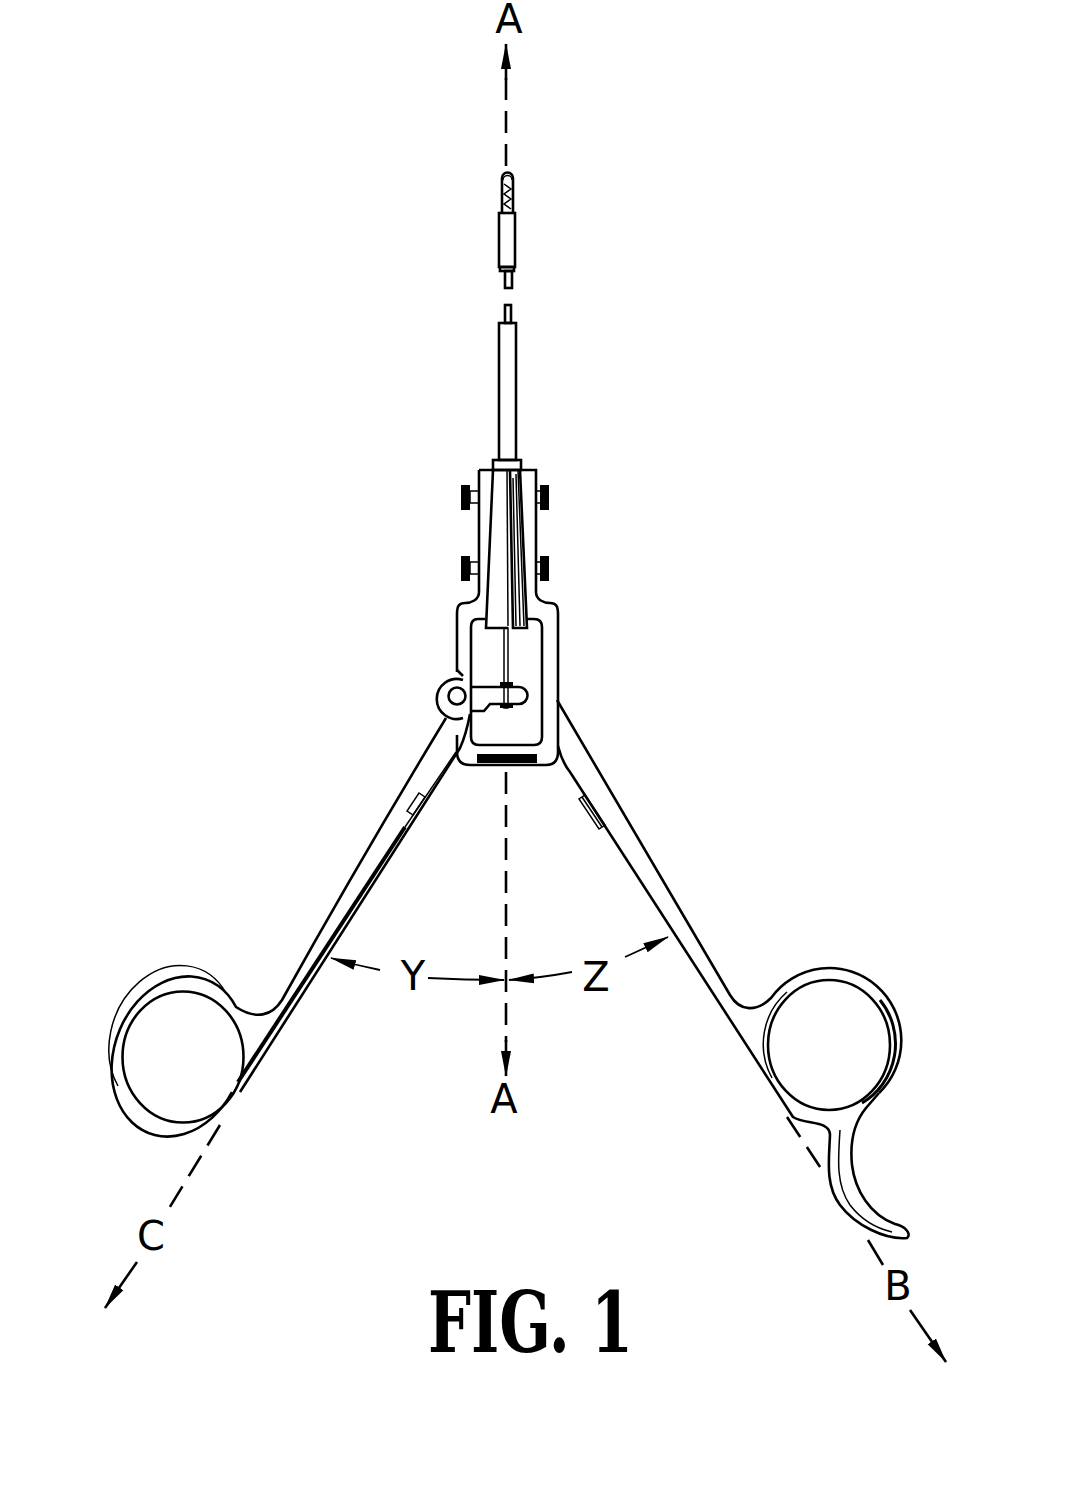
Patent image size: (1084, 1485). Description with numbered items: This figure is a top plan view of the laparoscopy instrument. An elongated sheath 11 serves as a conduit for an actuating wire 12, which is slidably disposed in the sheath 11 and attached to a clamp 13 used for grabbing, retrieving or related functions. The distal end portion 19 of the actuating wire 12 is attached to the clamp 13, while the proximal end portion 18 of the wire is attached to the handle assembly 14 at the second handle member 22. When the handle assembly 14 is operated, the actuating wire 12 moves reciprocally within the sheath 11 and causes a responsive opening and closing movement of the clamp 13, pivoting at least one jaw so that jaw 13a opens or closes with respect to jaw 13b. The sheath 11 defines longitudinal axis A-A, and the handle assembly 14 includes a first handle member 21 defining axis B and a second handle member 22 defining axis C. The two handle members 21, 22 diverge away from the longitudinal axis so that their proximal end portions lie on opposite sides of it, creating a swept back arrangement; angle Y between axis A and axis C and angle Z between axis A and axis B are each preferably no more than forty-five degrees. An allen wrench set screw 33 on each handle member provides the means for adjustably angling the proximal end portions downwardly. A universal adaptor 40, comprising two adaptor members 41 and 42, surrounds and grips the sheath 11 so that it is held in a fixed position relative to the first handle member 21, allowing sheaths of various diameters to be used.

The elongated sheath 11 is at (508, 394).
The actuating wire 12 is at (513, 315).
The clamp 13 is at (515, 175).
The jaw 13a is at (513, 194).
The jaw 13b is at (498, 198).
The handle assembly 14 is at (505, 684).
The proximal end portion 18 is at (509, 658).
The distal end portion 19 is at (503, 274).
The first handle member 21 is at (656, 845).
The second handle member 22 is at (357, 848).
The allen wrench set screw 33 is at (385, 804).
The universal adaptor 40 is at (505, 515).
The adaptor member 41 is at (496, 534).
The adaptor member 42 is at (518, 538).